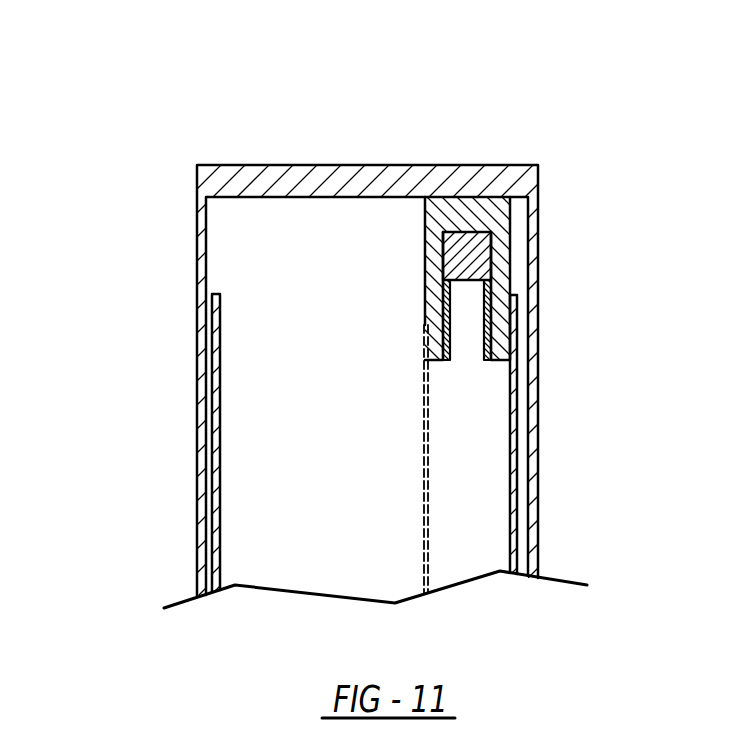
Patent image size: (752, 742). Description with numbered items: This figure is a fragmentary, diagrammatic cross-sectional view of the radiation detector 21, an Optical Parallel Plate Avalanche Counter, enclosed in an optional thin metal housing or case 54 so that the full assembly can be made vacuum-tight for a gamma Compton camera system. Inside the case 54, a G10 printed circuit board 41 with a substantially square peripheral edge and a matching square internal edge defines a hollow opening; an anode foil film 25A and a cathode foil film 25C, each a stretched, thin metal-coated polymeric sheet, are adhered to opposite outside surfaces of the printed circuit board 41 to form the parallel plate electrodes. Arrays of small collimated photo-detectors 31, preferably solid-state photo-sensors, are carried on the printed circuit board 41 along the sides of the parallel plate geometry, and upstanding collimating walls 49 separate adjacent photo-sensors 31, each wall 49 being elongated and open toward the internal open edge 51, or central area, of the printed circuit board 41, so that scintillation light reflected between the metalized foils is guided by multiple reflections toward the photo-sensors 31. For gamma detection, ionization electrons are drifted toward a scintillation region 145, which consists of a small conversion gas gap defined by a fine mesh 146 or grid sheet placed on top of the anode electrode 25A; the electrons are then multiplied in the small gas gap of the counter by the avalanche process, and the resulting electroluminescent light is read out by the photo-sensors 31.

The radiation detector 21 is at (534, 73).
The metal housing or case 54 is at (497, 178).
The printed circuit board 41 is at (448, 212).
The collimated photo-detectors 31 is at (478, 248).
The collimating walls 49 is at (447, 302).
The internal open edge 51 is at (432, 360).
The cathode foil film 25C is at (217, 370).
The anode foil film 25A is at (510, 410).
The scintillation region 145 is at (460, 462).
The fine mesh 146 is at (426, 553).